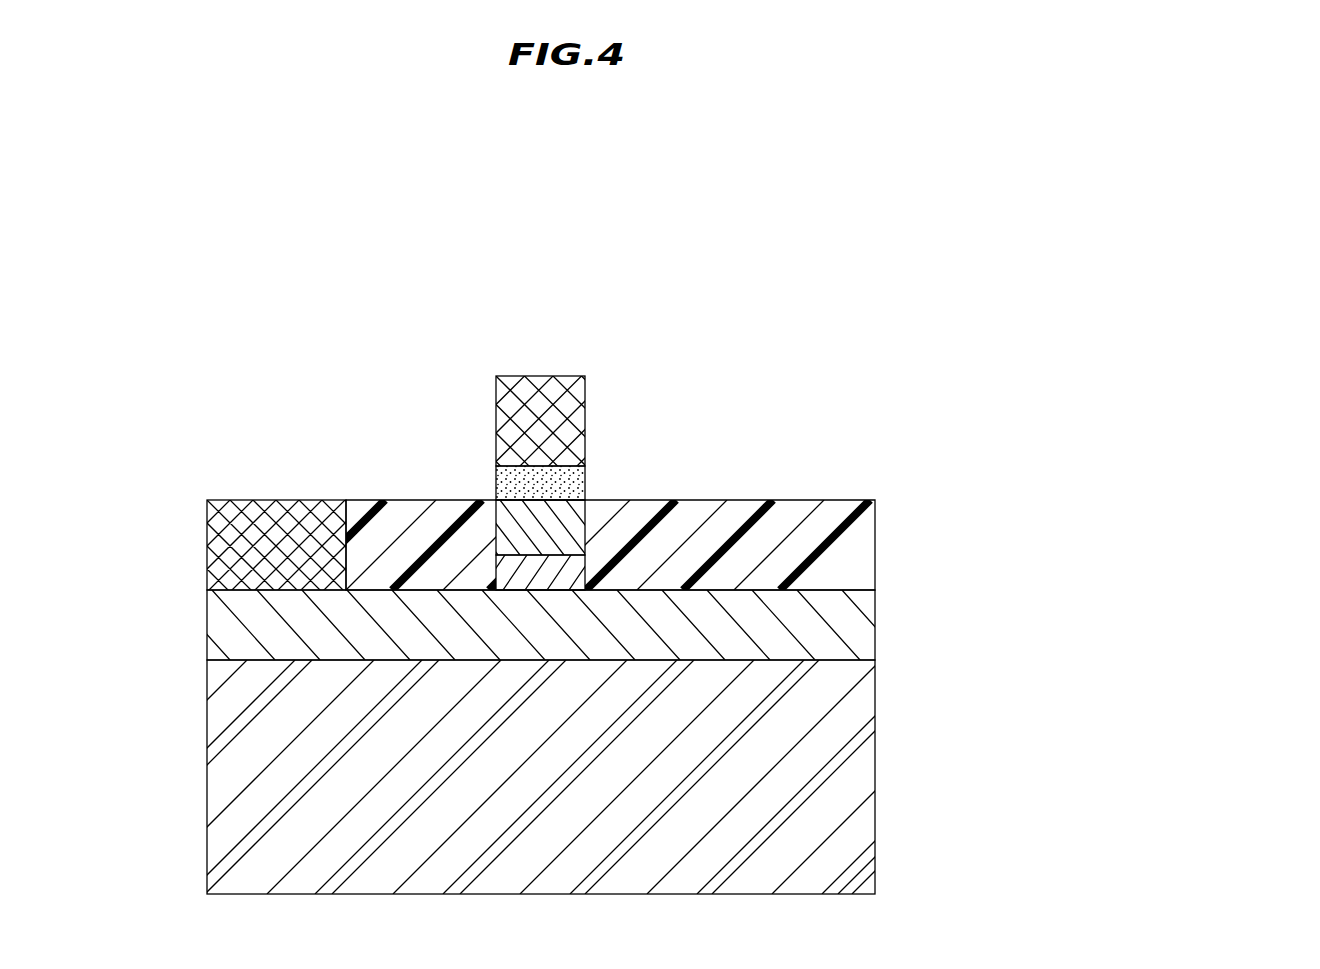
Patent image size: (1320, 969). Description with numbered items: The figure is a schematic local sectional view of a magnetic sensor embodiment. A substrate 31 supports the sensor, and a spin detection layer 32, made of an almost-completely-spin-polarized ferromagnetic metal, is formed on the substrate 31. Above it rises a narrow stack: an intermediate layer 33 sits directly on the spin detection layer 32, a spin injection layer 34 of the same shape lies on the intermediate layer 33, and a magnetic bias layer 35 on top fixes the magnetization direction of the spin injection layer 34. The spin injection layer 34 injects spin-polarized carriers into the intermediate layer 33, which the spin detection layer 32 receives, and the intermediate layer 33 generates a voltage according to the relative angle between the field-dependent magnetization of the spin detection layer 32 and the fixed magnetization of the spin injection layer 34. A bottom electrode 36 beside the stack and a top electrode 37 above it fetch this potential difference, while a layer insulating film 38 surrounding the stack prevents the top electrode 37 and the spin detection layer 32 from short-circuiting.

The substrate 31 is at (862, 740).
The spin detection layer 32 is at (862, 620).
The intermediate layer 33 is at (560, 568).
The spin injection layer 34 is at (562, 522).
The magnetic bias layer 35 is at (576, 480).
The bottom electrode 36 is at (257, 500).
The top electrode 37 is at (532, 388).
The layer insulating film 38 is at (408, 507).